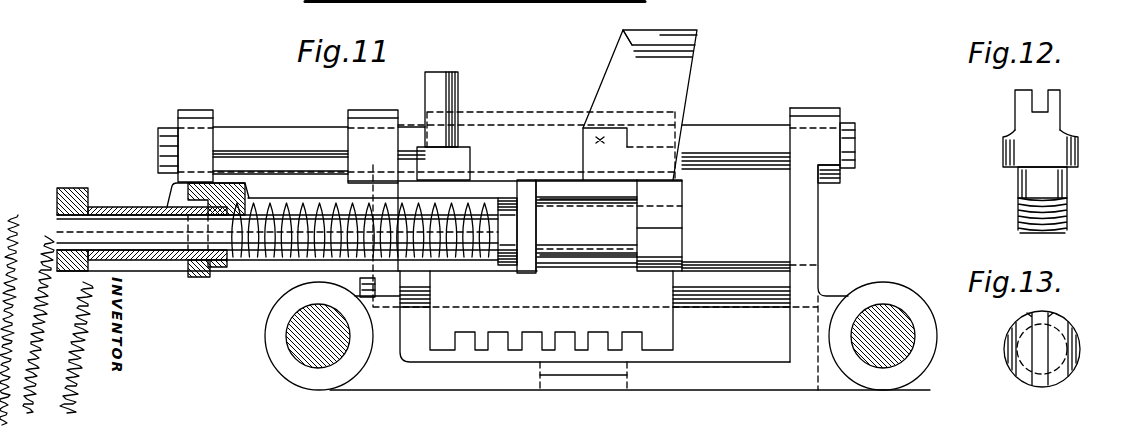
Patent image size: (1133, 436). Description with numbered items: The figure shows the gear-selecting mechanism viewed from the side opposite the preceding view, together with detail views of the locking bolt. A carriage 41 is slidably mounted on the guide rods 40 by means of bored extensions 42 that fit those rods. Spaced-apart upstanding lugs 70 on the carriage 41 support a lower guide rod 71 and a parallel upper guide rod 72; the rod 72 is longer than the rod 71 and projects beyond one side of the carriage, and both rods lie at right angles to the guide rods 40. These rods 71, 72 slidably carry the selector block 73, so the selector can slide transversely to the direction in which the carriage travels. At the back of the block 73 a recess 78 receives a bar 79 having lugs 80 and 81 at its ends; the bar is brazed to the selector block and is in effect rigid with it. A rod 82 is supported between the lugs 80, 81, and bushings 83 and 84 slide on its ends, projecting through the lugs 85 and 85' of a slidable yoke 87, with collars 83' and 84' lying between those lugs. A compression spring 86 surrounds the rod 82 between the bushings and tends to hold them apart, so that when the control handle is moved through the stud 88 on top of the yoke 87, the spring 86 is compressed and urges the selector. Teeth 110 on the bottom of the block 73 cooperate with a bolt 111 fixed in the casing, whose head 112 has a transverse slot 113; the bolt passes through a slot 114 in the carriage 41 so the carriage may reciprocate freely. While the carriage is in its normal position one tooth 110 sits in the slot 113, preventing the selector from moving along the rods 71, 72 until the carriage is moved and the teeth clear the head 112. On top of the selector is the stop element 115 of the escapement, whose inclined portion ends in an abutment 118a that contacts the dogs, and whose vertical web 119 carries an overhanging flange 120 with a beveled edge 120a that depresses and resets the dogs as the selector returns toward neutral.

In FIG. 11, the guide rods 40 is at (297, 342).
In FIG. 11, the carriage 41 is at (716, 377).
In FIG. 11, the extensions 42 is at (300, 379).
In FIG. 11, the upstanding lugs 70 is at (381, 104).
In FIG. 11, the lower guide rod 71 is at (758, 293).
In FIG. 11, the upper guide rod 72 is at (284, 136).
In FIG. 11, the selector block 73 is at (537, 113).
In FIG. 11, the recess or groove 78 is at (488, 267).
In FIG. 11, the bar 79 is at (606, 262).
In FIG. 11, the lug 80 is at (676, 198).
In FIG. 11, the lug 81 is at (78, 190).
In FIG. 11, the rod 82 is at (113, 220).
In FIG. 11, the bushing 83 is at (515, 225).
In FIG. 11, the collar 83' is at (501, 273).
In FIG. 11, the bushing 84 is at (297, 254).
In FIG. 11, the collar 84' is at (208, 242).
In FIG. 11, the lug 85 is at (196, 292).
In FIG. 11, the lug 85' is at (531, 243).
In FIG. 11, the compression spring 86 is at (295, 258).
In FIG. 11, the yoke 87 is at (362, 220).
In FIG. 11, the stud 88 is at (449, 93).
In FIG. 11, the teeth 110 is at (517, 346).
In FIG. 12, the bolt 111 is at (1112, 193).
In FIG. 13, the bolt 111 is at (1025, 376).
In FIG. 12, the head 112 is at (1070, 133).
In FIG. 13, the head 112 is at (1080, 347).
In FIG. 12, the transverse slot 113 is at (1040, 101).
In FIG. 13, the transverse slot 113 is at (1045, 340).
In FIG. 11, the slot 114 is at (588, 380).
In FIG. 11, the stop element 115 is at (640, 166).
In FIG. 11, the abutment 118a is at (607, 137).
In FIG. 11, the vertical web 119 is at (688, 78).
In FIG. 11, the overhanging flange 120 is at (697, 32).
In FIG. 11, the beveled edge 120a is at (623, 31).